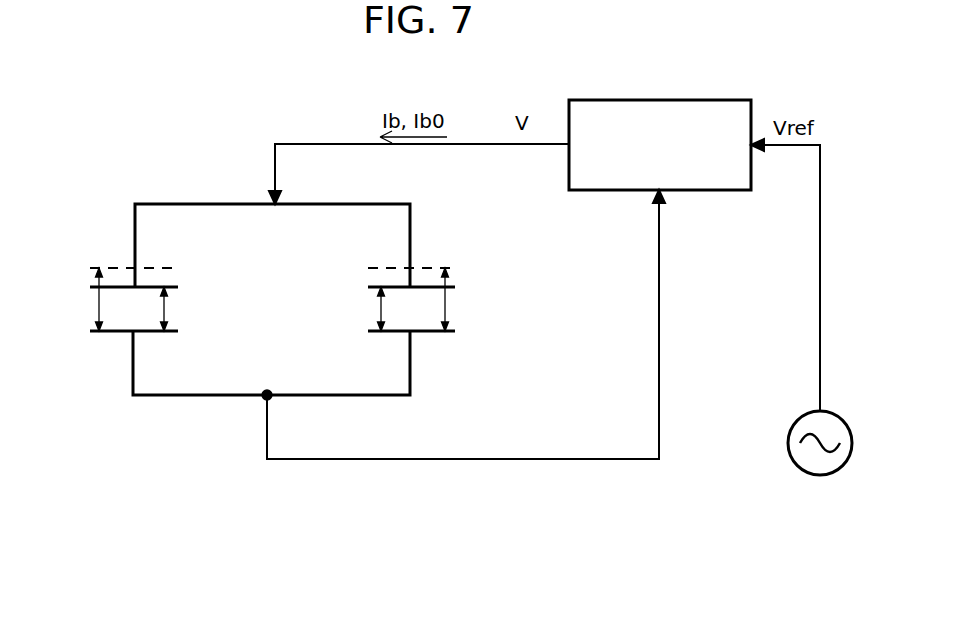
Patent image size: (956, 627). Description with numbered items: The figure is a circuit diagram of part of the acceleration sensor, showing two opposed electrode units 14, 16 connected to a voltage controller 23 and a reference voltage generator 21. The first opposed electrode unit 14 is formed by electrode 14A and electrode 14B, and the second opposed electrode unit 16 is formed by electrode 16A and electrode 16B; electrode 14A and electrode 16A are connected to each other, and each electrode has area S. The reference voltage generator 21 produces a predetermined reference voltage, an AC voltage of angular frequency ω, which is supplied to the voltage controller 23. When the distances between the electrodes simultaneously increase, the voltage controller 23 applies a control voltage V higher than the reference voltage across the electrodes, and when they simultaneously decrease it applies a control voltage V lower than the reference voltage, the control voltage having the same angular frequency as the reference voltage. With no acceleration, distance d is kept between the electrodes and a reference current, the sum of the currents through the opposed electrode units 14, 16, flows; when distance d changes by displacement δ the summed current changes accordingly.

The opposed electrode unit 14 is at (120, 387).
The electrode 14A is at (118, 287).
The electrode 14B is at (140, 332).
The opposed electrode unit 16 is at (424, 420).
The electrode 16A is at (400, 287).
The electrode 16B is at (423, 332).
The reference voltage generator 21 is at (792, 427).
The voltage controller 23 is at (683, 190).